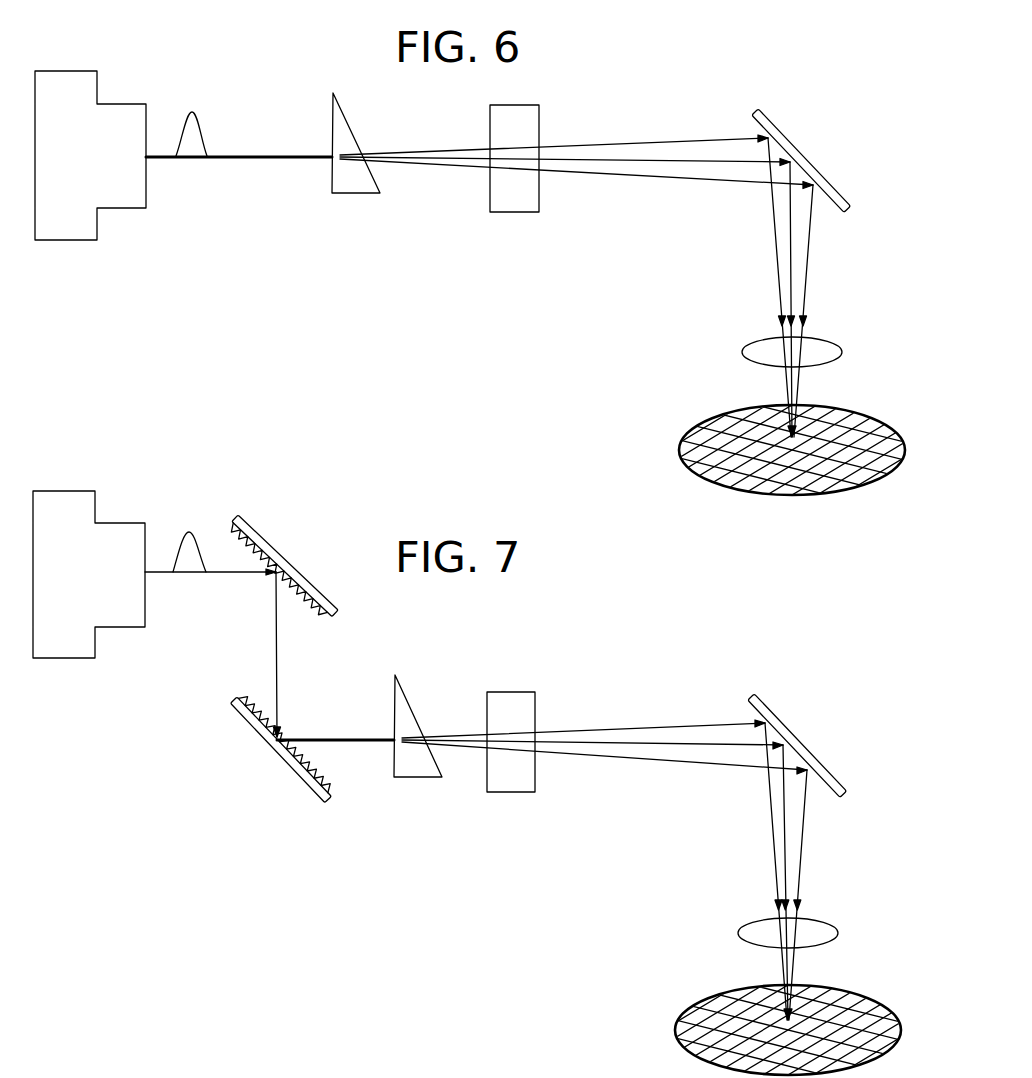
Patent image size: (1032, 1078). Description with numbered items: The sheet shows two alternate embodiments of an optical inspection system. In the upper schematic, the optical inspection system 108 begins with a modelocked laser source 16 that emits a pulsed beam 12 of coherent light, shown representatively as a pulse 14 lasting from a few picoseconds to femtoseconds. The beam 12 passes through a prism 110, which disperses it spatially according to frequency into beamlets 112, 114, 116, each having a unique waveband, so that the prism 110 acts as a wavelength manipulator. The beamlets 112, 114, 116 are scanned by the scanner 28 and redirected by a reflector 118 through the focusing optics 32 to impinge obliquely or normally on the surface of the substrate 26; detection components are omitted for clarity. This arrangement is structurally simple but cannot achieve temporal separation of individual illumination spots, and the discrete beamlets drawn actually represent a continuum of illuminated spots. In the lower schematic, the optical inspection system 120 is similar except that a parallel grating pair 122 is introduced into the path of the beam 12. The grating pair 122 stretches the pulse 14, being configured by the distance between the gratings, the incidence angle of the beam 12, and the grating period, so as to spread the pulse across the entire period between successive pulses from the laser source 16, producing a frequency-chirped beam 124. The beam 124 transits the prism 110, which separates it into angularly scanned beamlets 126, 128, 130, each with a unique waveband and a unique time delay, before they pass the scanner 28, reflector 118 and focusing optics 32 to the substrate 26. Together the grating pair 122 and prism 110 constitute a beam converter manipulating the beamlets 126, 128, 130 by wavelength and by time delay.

In FIG. 6, the pulsed beam 12 is at (248, 160).
In FIG. 7, the pulsed beam 12 is at (232, 573).
In FIG. 6, the pulse 14 is at (200, 124).
In FIG. 7, the pulse 14 is at (180, 537).
In FIG. 6, the modelocked laser source 16 is at (71, 71).
In FIG. 7, the modelocked laser source 16 is at (70, 491).
In FIG. 6, the substrate 26 is at (870, 432).
In FIG. 7, the substrate 26 is at (870, 1012).
In FIG. 6, the scanner 28 is at (500, 212).
In FIG. 7, the scanner 28 is at (497, 792).
In FIG. 6, the focusing optics 32 is at (742, 352).
In FIG. 7, the focusing optics 32 is at (738, 933).
In FIG. 6, the optical inspection system 108 is at (757, 85).
In FIG. 6, the prism 110 is at (332, 110).
In FIG. 7, the prism 110 is at (394, 693).
In FIG. 6, the beamlet 112 is at (595, 148).
In FIG. 6, the beamlet 114 is at (706, 158).
In FIG. 6, the beamlet 116 is at (603, 170).
In FIG. 6, the reflector 118 is at (817, 172).
In FIG. 7, the reflector 118 is at (815, 757).
In FIG. 7, the optical inspection system 120 is at (755, 668).
In FIG. 7, the parallel grating pair 122 is at (207, 808).
In FIG. 7, the frequency-chirped beam 124 is at (345, 743).
In FIG. 7, the beamlet 126 is at (592, 732).
In FIG. 7, the beamlet 128 is at (708, 745).
In FIG. 7, the beamlet 130 is at (603, 758).